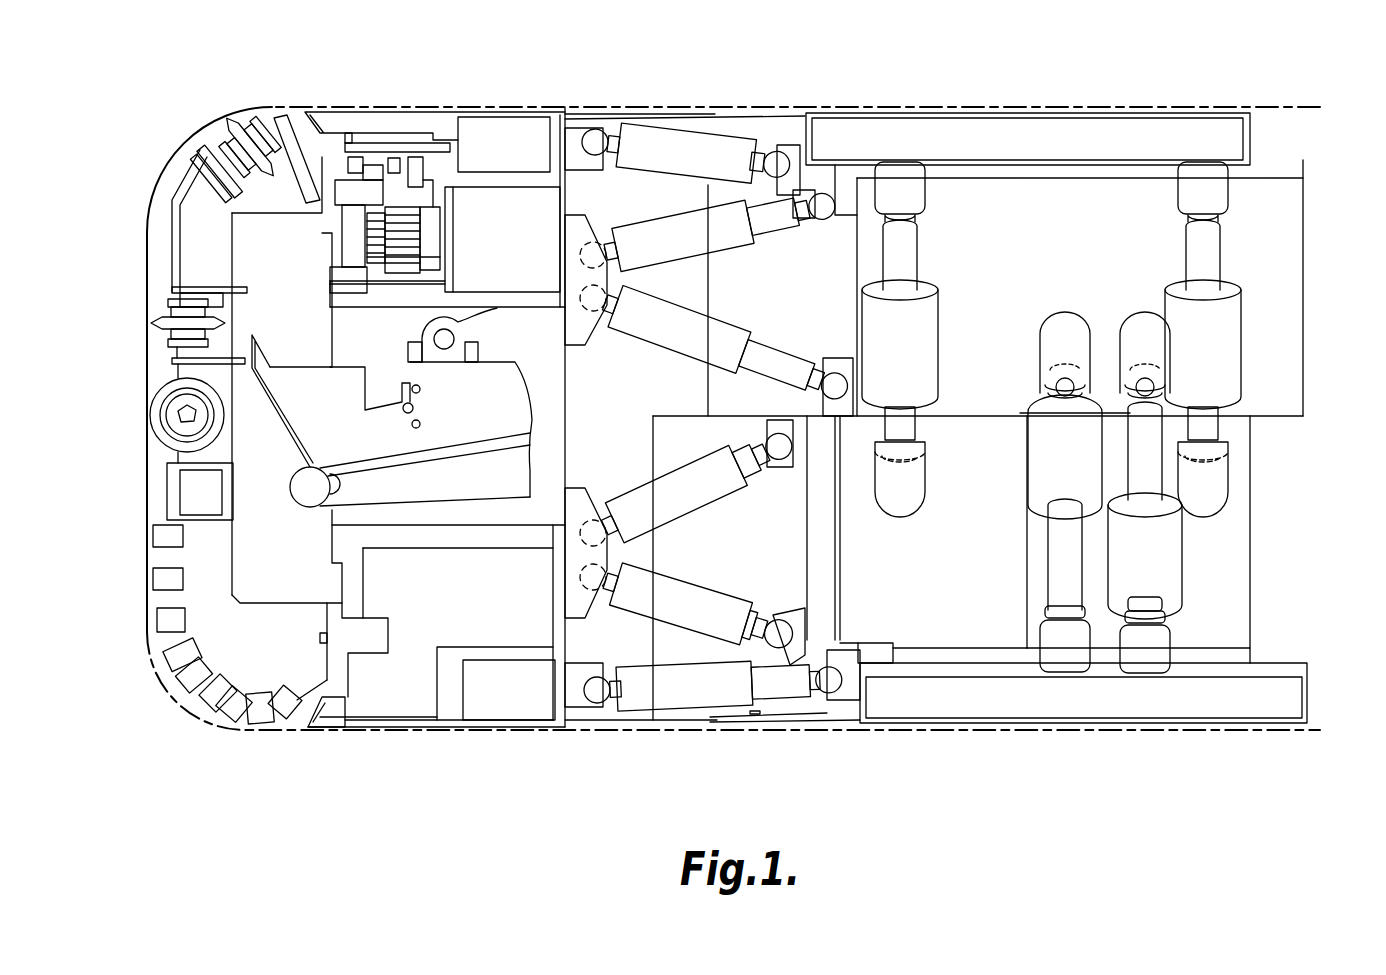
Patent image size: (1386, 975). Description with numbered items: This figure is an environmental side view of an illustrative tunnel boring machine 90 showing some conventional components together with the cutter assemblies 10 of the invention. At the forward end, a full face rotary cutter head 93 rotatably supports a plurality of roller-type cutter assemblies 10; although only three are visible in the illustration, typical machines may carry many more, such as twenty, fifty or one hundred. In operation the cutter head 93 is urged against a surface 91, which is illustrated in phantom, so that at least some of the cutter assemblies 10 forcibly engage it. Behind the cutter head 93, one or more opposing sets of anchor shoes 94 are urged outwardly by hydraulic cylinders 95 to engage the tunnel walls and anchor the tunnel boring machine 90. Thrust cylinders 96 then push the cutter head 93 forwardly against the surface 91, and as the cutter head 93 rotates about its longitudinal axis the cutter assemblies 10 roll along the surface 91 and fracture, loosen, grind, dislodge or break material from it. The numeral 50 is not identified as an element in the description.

The cutter assemblies 10 is at (253, 106).
The mounting bracket 50 is at (222, 145).
The tunnel boring machine 90 is at (707, 468).
The surface 91 is at (172, 142).
The cutter head 93 is at (160, 255).
The anchor shoes 94 is at (832, 135).
The hydraulic cylinders 95 is at (910, 362).
The thrust cylinders 96 is at (692, 168).